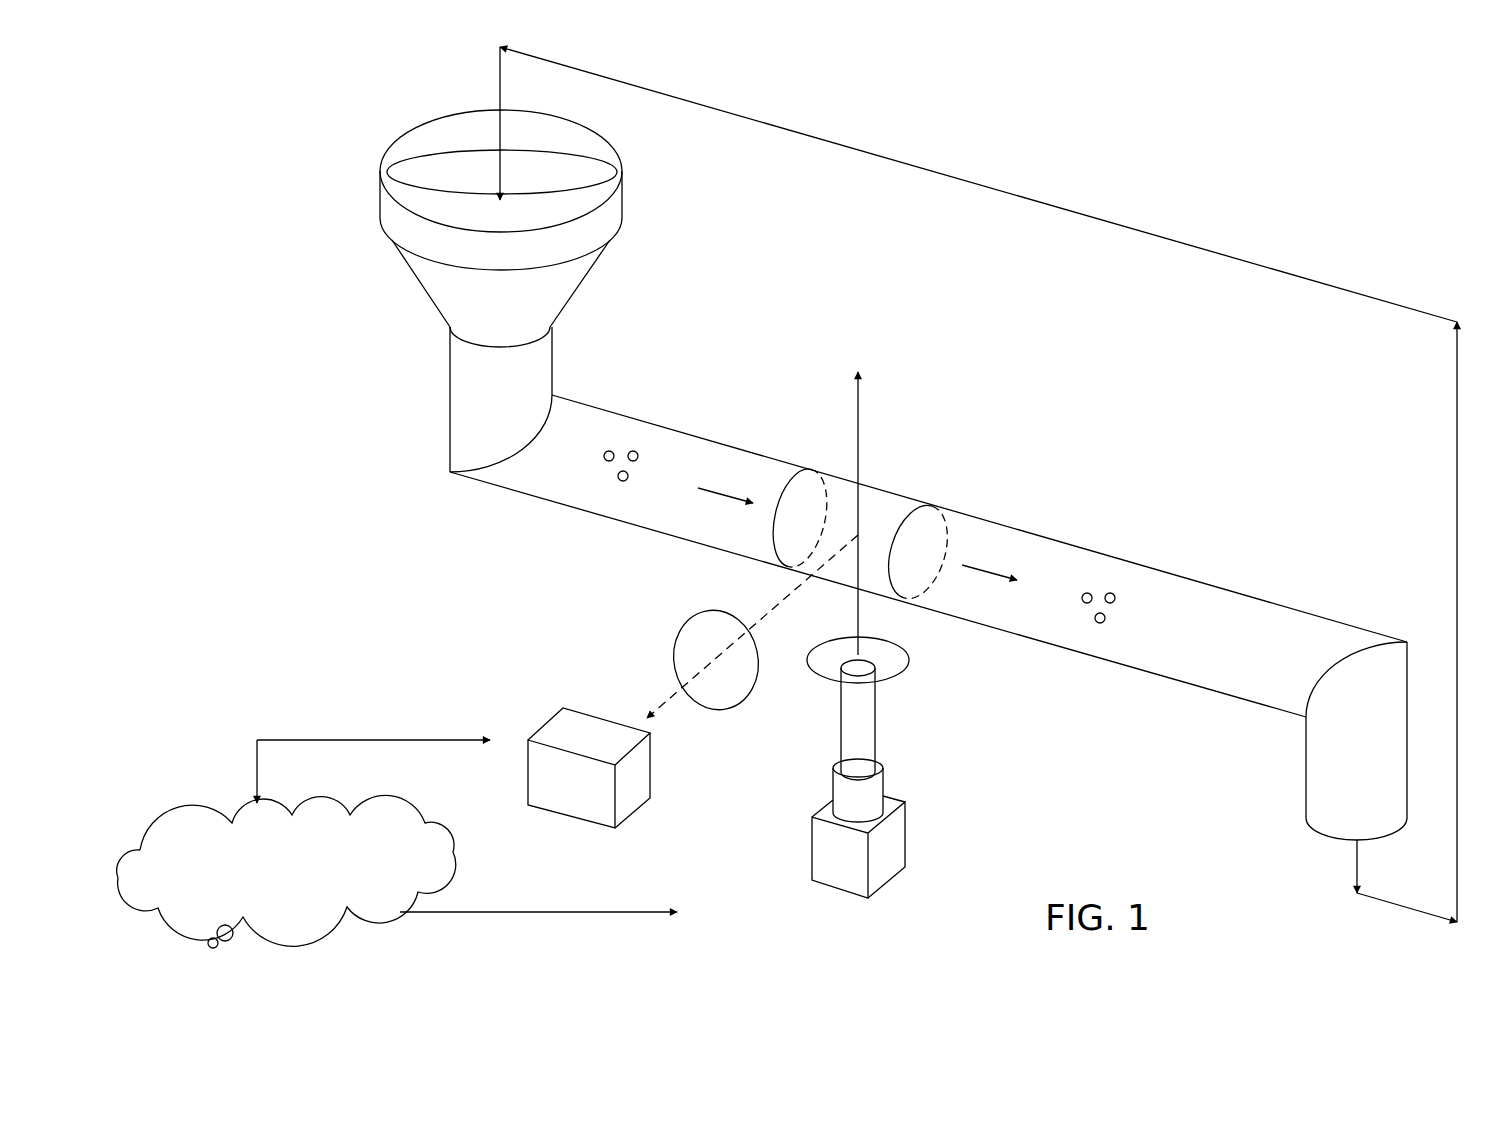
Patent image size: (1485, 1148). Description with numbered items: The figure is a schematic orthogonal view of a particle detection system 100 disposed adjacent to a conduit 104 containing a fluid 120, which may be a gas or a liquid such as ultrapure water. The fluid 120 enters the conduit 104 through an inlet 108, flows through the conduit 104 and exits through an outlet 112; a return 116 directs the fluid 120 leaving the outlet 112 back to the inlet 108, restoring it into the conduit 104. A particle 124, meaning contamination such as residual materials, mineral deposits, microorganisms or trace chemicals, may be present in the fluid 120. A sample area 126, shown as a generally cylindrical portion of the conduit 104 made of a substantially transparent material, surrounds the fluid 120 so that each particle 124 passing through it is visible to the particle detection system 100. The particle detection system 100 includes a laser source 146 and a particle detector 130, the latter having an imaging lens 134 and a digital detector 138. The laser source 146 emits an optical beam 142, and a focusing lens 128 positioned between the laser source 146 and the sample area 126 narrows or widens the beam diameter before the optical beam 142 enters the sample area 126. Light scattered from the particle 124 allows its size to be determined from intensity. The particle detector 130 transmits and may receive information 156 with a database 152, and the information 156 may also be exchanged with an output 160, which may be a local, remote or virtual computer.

The particle detection system 100 is at (1280, 185).
The conduit 104 is at (450, 380).
The inlet 108 is at (418, 148).
The outlet 112 is at (1325, 833).
The return 116 is at (1013, 197).
The fluid 120 is at (992, 553).
The particle 124 is at (652, 457).
The sample area 126 is at (893, 515).
The focusing lens 128 is at (910, 658).
The particle detector 130 is at (572, 663).
The imaging lens 134 is at (685, 620).
The digital detector 138 is at (528, 772).
The optical beam 142 is at (877, 727).
The laser source 146 is at (907, 838).
The database 152 is at (310, 879).
The information 156 is at (337, 738).
The output 160 is at (538, 897).